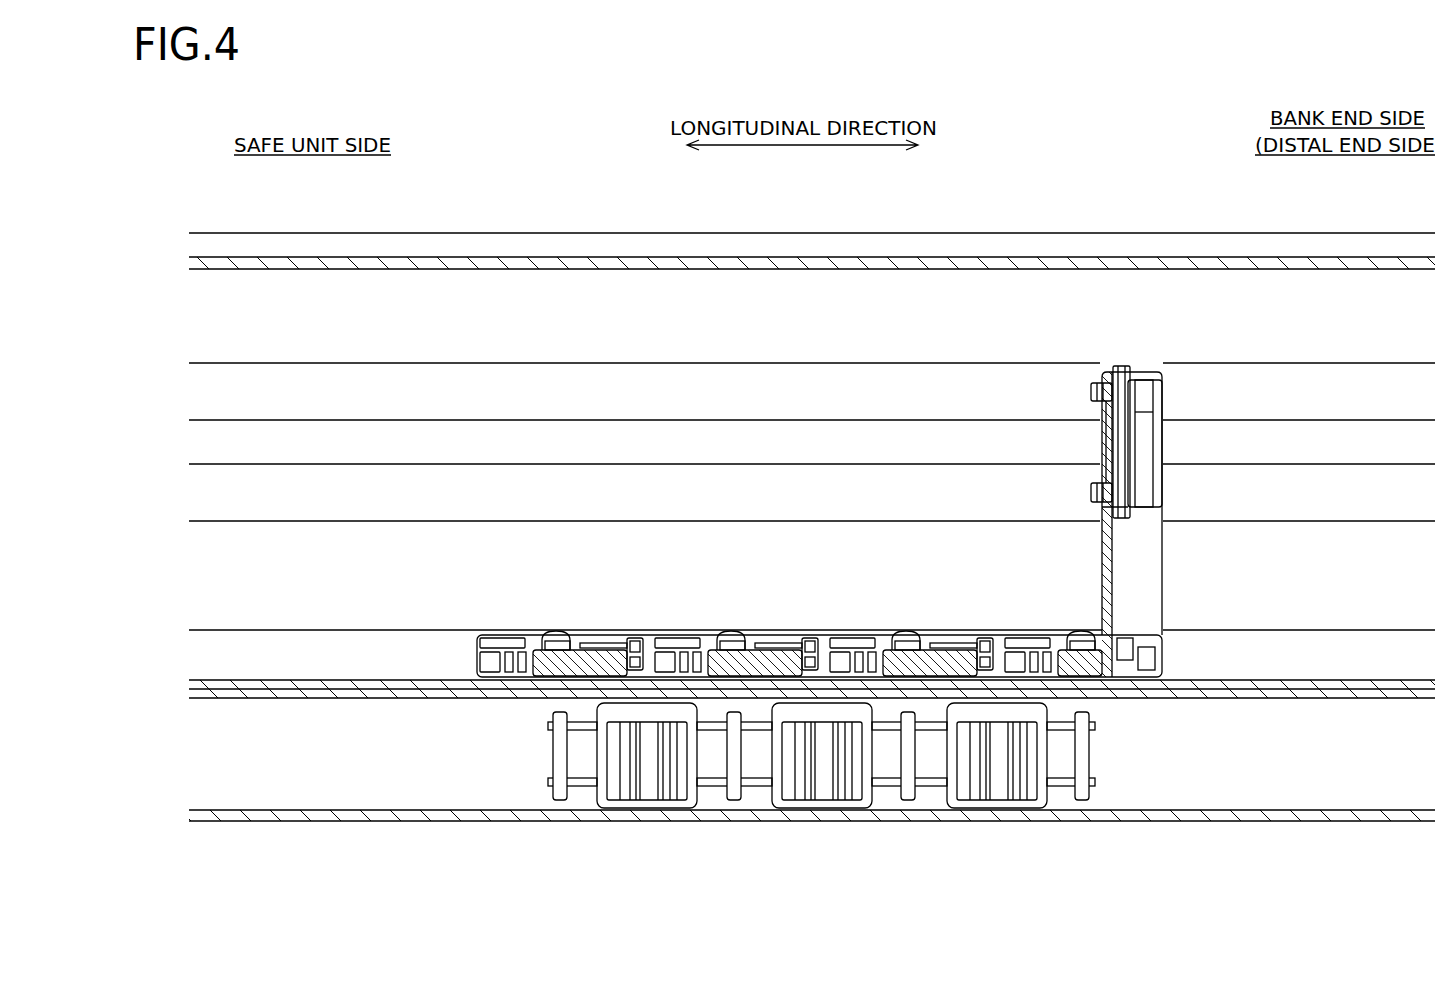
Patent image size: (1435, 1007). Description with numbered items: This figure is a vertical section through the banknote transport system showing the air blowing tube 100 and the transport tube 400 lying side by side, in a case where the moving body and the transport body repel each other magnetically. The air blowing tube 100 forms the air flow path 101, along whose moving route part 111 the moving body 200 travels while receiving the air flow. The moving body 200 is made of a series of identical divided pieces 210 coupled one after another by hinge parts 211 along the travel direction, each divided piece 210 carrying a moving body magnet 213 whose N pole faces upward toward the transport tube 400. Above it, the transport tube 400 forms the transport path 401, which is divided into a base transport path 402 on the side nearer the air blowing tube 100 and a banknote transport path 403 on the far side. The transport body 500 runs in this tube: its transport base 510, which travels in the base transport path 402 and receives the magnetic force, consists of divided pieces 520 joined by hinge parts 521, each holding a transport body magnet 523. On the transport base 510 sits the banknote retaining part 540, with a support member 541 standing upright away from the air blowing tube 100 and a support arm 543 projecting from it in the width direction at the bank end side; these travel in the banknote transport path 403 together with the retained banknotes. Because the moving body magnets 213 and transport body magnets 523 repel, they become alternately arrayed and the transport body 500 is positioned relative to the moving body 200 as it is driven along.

The transport tube 400 is at (333, 258).
The transport path 401 is at (757, 437).
The banknote transport path 403 is at (185, 273).
The base transport path 402 is at (784, 653).
The air flow path 101 is at (185, 699).
The air blowing tube 100 is at (812, 838).
The moving route part 111 is at (316, 821).
The transport body 500 is at (881, 493).
The banknote retaining part 540 is at (1129, 492).
The support member 541 is at (1151, 355).
The support arm 543 is at (1090, 392).
The transport base 510 is at (854, 619).
The divided piece 520 is at (592, 609).
The hinge part 521 is at (650, 619).
The transport body magnet 523 is at (553, 633).
The moving body 200 is at (896, 791).
The divided piece 210 is at (820, 791).
The hinge part 211 is at (740, 818).
The moving body magnet 213 is at (622, 716).